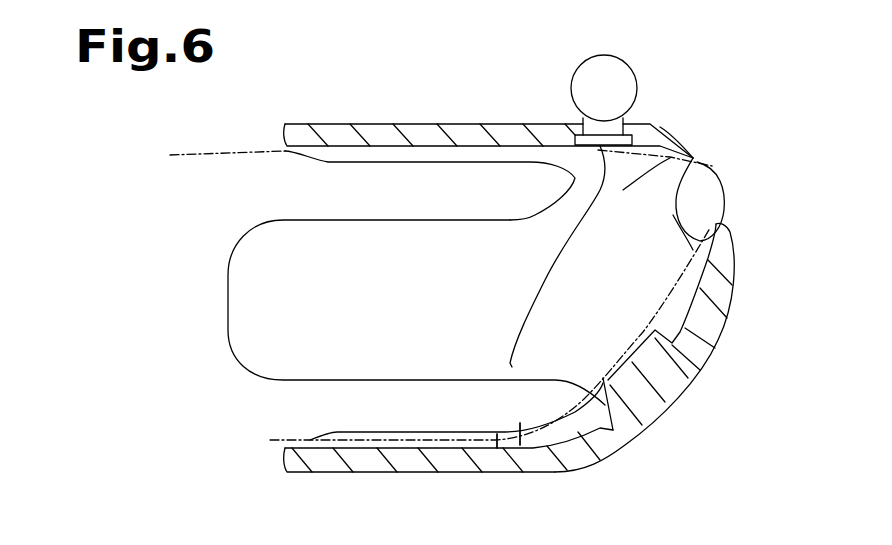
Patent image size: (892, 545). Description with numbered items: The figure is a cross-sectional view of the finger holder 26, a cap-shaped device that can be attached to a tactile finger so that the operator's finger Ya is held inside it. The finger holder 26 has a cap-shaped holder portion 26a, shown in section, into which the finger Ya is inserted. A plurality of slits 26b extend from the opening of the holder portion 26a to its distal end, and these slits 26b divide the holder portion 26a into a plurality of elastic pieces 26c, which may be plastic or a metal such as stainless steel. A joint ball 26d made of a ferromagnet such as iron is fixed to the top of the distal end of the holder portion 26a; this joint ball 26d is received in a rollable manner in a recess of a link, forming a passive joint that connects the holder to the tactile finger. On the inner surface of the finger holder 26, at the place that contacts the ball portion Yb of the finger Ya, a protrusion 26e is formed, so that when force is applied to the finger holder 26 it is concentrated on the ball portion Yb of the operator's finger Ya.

The finger holder 26 is at (731, 299).
The holder portion 26a is at (458, 122).
The slits 26b is at (342, 220).
The elastic pieces 26c is at (365, 300).
The joint ball 26d is at (632, 71).
The protrusion 26e is at (637, 352).
The finger Ya is at (533, 470).
The ball portion Yb is at (613, 452).